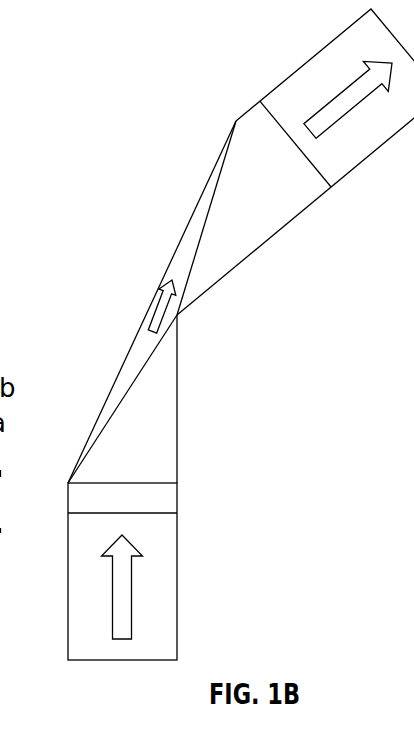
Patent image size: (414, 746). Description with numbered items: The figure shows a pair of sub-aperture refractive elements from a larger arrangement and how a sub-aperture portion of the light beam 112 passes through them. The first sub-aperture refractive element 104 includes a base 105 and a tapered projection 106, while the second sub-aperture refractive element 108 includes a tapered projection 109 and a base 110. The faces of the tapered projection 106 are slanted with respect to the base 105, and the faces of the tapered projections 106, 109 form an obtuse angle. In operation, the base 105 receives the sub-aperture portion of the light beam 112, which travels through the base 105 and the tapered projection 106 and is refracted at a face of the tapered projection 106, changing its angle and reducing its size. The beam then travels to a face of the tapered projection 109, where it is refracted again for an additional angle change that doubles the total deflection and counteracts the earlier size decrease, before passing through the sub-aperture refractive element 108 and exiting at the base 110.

The sub-aperture refractive element 104 is at (102, 430).
The base 105 is at (177, 493).
The tapered projection 106 is at (178, 355).
The sub-aperture refractive element 108 is at (210, 205).
The tapered projection 109 is at (223, 278).
The base 110 is at (318, 197).
The light beam 112 is at (307, 63).